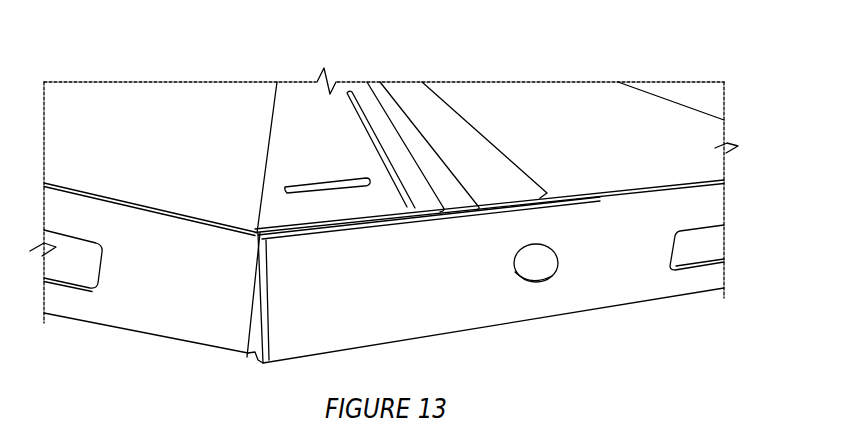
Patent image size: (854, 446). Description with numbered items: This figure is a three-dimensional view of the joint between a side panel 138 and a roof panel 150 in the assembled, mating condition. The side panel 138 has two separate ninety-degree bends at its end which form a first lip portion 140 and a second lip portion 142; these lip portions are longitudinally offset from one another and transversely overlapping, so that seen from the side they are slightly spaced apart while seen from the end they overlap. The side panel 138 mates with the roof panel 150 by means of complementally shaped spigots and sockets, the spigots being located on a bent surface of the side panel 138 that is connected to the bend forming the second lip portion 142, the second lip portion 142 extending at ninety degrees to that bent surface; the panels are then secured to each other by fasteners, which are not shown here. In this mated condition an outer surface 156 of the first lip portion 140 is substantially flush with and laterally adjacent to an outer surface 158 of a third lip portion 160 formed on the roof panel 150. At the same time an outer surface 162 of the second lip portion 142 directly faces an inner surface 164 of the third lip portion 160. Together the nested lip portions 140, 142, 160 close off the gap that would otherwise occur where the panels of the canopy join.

The side panel 138 is at (211, 151).
The first lip portion 140 is at (118, 191).
The second lip portion 142 is at (350, 207).
The roof panel 150 is at (525, 120).
The outer surface of the first lip portion 156 is at (177, 232).
The outer surface of the third lip portion 158 is at (292, 252).
The third lip portion 160 is at (629, 188).
The outer surface of the second lip portion 162 is at (327, 228).
The inner surface of the third lip portion 164 is at (388, 225).